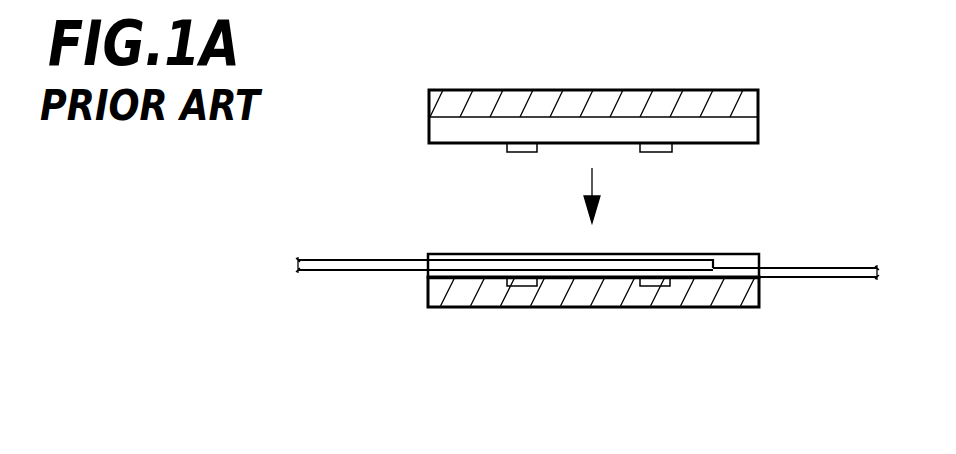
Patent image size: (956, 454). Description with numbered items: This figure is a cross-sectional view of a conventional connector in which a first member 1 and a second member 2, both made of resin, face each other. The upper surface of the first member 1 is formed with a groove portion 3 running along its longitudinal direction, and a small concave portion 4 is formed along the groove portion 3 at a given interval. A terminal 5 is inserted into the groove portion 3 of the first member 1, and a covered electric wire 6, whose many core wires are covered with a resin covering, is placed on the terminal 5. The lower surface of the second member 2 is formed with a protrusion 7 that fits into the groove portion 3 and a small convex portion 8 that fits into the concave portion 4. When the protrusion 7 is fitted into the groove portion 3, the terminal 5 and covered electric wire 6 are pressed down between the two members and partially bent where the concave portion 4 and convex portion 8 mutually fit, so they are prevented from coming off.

The first member 1 is at (730, 307).
The second member 2 is at (628, 90).
The groove portion 3 is at (723, 254).
The concave portion 4 is at (520, 287).
The terminal 5 is at (805, 278).
The covered electric wire 6 is at (360, 260).
The protrusion 7 is at (758, 122).
The convex portion 8 is at (522, 153).